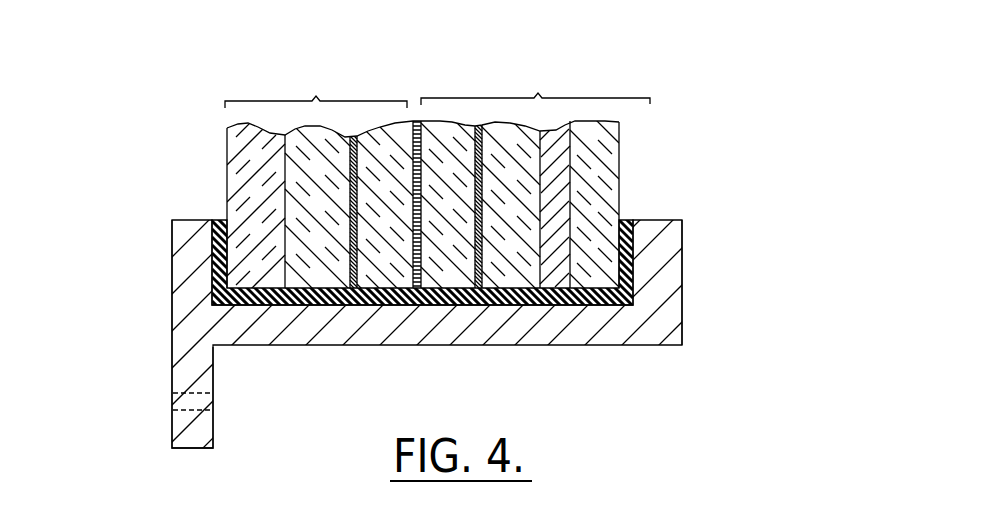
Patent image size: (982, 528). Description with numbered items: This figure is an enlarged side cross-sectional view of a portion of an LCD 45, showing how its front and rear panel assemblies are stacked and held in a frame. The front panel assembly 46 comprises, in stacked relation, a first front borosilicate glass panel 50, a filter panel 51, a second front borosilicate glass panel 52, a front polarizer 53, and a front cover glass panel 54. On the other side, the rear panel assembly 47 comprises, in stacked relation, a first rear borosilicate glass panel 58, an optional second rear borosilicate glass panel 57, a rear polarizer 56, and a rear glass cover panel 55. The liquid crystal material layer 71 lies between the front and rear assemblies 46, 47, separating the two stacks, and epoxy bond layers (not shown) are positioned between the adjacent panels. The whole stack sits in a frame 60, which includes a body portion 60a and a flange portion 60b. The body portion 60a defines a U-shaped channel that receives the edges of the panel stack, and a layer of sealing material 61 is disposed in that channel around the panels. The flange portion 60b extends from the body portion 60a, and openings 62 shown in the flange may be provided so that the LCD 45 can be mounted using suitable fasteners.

The LCD 45 is at (615, 67).
The front panel assembly 46 is at (535, 85).
The rear panel assembly 47 is at (316, 88).
The first front borosilicate glass panel 50 is at (602, 272).
The filter panel 51 is at (553, 277).
The second front borosilicate glass panel 52 is at (530, 279).
The front polarizer 53 is at (478, 281).
The front cover glass panel 54 is at (455, 279).
The rear glass cover panel 55 is at (404, 279).
The rear polarizer 56 is at (352, 280).
The second rear borosilicate glass panel 57 is at (333, 279).
The first rear borosilicate glass panel 58 is at (259, 278).
The frame 60 is at (686, 230).
The body portion 60a is at (682, 303).
The flange portion 60b is at (173, 363).
The layer of sealing material 61 is at (632, 217).
The openings 62 is at (173, 405).
The liquid crystal material layer 71 is at (416, 122).